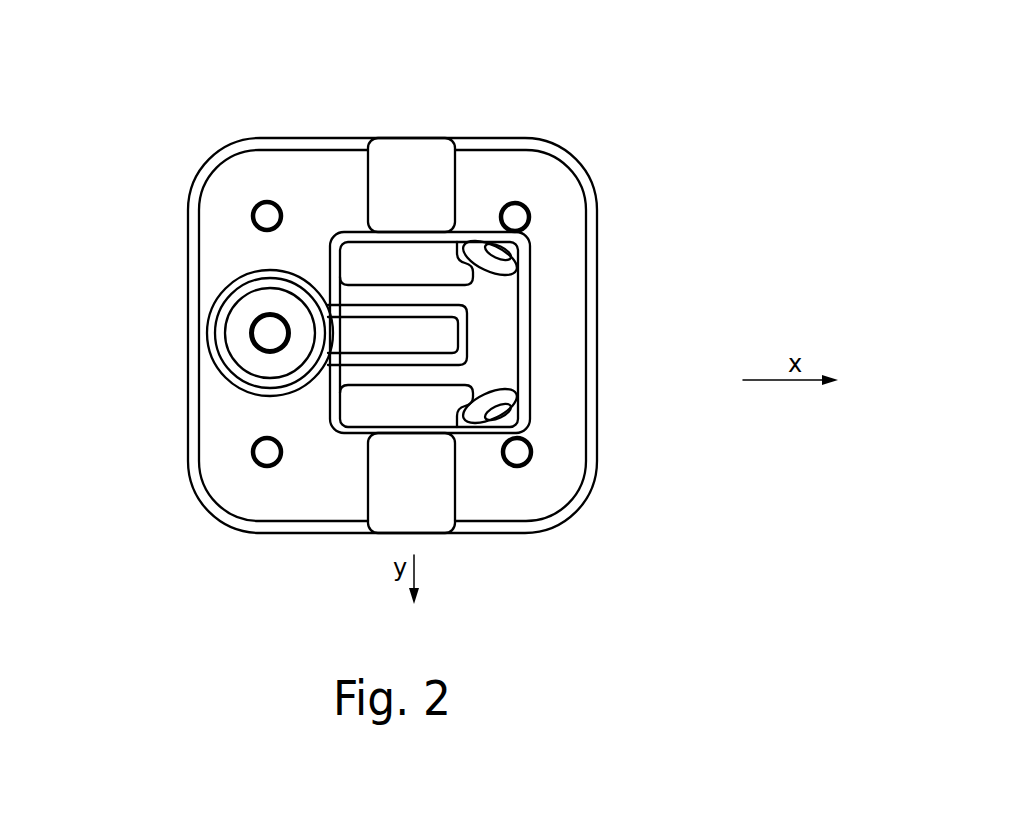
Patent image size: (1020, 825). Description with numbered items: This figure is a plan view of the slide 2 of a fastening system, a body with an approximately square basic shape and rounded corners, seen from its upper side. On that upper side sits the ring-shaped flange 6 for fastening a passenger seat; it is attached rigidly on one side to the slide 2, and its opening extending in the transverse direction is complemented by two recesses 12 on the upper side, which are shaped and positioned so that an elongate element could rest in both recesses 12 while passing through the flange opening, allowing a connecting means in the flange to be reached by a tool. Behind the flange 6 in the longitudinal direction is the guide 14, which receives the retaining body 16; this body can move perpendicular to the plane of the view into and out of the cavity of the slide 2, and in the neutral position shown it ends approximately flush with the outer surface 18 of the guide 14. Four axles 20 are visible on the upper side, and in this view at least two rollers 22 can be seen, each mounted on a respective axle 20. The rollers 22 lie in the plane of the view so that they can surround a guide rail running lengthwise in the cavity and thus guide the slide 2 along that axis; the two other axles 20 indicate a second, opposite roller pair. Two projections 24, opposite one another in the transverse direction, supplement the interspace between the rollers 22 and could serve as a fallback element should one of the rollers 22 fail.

The slide 2 is at (488, 188).
The flange 6 is at (442, 336).
The recesses 12 is at (397, 202).
The guide 14 is at (250, 362).
The retaining body 16 is at (270, 336).
The outer surface 18 is at (226, 333).
The axles 20 is at (267, 215).
The rollers 22 is at (500, 263).
The projections 24 is at (395, 272).